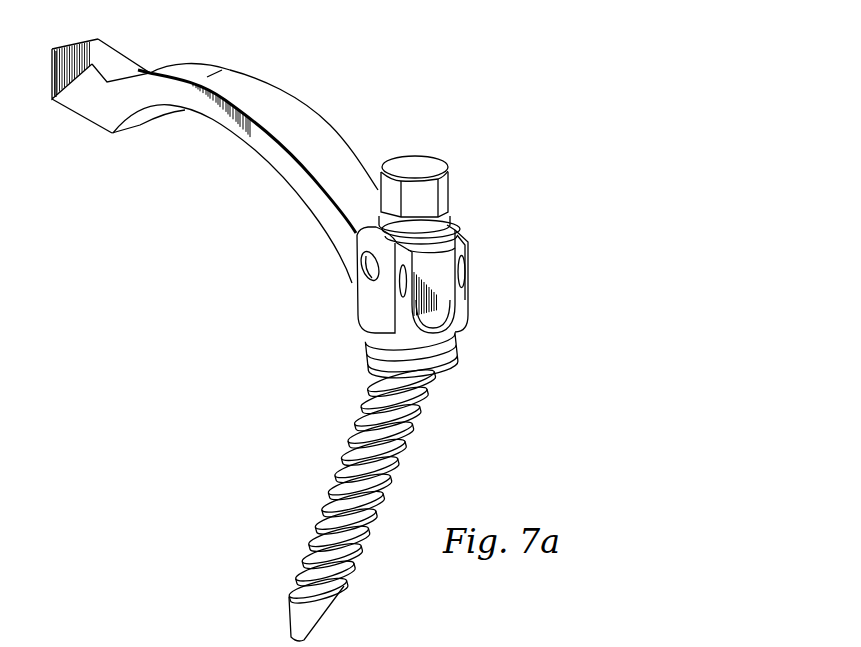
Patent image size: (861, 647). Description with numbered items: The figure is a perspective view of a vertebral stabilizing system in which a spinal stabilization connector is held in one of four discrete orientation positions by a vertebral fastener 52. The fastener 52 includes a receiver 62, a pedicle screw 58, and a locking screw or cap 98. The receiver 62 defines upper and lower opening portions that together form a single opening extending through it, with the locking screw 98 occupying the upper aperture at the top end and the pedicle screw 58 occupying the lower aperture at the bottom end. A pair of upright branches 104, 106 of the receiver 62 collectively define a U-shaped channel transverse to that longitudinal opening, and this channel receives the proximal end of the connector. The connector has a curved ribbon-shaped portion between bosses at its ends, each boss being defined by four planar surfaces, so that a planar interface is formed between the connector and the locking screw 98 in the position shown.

The vertebral fastener 52 is at (427, 374).
The pedicle screw 58 is at (362, 585).
The receiver 62 is at (432, 291).
The locking screw 98 is at (415, 162).
The upright branch 104 is at (362, 321).
The upright branch 106 is at (466, 298).